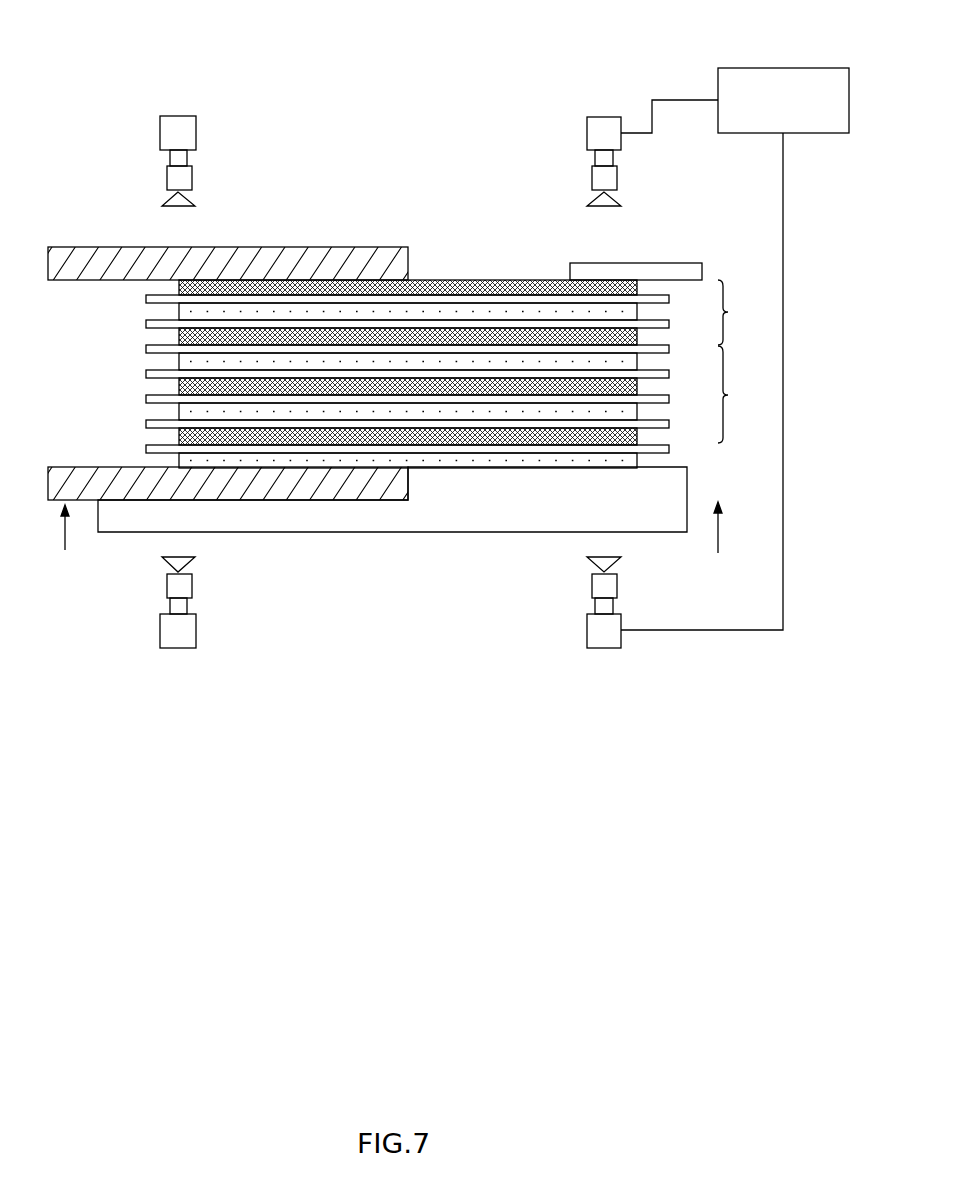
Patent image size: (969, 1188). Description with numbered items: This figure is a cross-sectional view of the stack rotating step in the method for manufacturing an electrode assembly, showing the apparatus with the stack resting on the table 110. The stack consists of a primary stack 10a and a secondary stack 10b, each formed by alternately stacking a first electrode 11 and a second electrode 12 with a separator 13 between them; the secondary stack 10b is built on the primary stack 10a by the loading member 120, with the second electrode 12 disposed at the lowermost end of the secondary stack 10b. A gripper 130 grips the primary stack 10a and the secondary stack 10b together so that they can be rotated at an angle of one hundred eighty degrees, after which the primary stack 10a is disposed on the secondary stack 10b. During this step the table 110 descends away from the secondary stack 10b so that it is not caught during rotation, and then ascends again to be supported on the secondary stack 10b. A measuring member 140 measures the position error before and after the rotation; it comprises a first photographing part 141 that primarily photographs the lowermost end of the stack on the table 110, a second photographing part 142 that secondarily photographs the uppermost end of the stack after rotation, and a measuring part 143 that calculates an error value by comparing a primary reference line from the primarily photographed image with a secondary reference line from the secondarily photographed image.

The primary stack 10a is at (742, 312).
The secondary stack 10b is at (742, 394).
The first electrode 11 is at (536, 285).
The second electrode 12 is at (437, 312).
The separator 13 is at (486, 298).
The table 110 is at (393, 535).
The loading member 120 is at (668, 263).
The gripper 130 is at (228, 247).
The measuring member 140 is at (733, 750).
The first photographing part 141 is at (603, 650).
The second photographing part 142 is at (605, 117).
The measuring part 143 is at (782, 68).